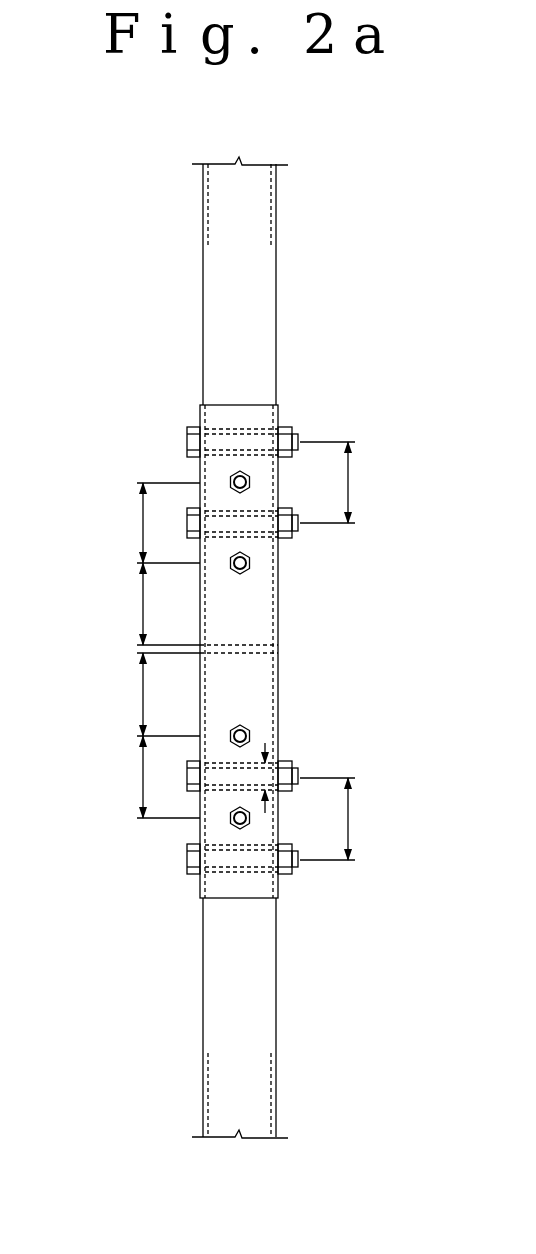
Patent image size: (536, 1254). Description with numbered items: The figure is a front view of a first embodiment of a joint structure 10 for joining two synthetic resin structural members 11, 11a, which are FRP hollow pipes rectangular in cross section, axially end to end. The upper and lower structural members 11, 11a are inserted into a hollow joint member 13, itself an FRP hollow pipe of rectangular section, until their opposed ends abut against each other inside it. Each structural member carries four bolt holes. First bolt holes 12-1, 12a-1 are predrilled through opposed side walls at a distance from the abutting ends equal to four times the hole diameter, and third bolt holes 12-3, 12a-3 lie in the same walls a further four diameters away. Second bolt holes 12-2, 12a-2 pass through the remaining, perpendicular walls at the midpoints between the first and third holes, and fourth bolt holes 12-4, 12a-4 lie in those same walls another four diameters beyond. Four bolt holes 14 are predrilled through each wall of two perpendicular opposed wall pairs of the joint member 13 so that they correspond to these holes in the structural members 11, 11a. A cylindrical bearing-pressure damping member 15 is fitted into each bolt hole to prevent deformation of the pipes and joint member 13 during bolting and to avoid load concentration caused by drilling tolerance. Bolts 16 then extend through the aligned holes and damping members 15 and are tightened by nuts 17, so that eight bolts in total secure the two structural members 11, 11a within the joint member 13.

The joint structure 10 is at (307, 252).
The synthetic resin structural member 11 is at (262, 302).
The synthetic resin structural member 11a is at (260, 1018).
The first bolt hole 12-1 is at (255, 565).
The second bolt hole 12-2 is at (287, 543).
The third bolt hole 12-3 is at (229, 479).
The fourth bolt hole 12-4 is at (285, 423).
The first bolt hole 12a-1 is at (255, 733).
The second bolt hole 12a-2 is at (287, 762).
The third bolt hole 12a-3 is at (226, 824).
The fourth bolt hole 12a-4 is at (284, 877).
The hollow joint member 13 is at (263, 620).
The bolt holes 14 is at (246, 653).
The bearing-pressure damping member 15 is at (222, 431).
The bolt 16 is at (188, 440).
The nut 17 is at (293, 430).